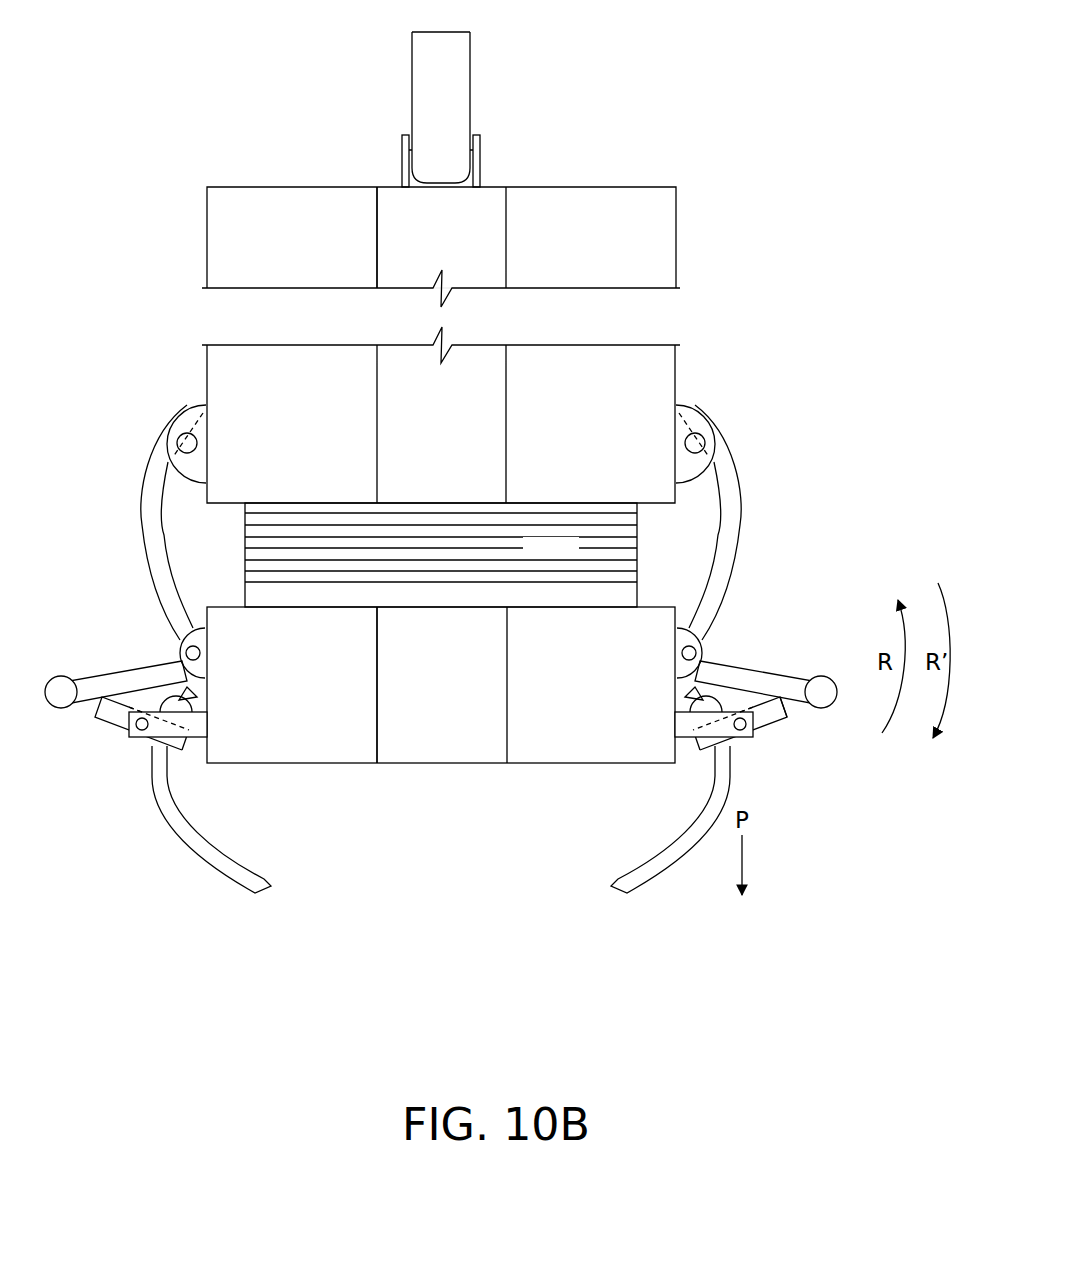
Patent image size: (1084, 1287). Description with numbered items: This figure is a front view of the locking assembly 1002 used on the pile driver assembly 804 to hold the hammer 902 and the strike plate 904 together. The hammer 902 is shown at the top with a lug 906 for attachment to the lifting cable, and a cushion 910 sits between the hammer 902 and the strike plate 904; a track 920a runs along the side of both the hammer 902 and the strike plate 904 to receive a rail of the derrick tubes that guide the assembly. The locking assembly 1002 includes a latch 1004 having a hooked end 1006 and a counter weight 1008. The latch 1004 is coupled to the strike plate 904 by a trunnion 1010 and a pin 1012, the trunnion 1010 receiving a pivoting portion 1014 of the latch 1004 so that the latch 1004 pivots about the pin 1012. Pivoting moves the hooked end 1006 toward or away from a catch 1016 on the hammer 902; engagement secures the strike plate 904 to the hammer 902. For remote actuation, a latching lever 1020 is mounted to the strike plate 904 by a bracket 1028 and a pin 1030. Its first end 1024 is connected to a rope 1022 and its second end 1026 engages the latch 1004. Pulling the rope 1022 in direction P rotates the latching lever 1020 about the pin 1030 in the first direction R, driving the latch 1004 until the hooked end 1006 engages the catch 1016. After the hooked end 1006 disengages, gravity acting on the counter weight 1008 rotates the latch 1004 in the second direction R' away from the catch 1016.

The pile driver assembly 804 is at (779, 280).
The hammer 902 is at (441, 345).
The strike plate 904 is at (441, 685).
The lug 906 is at (482, 147).
The cushion 910 is at (441, 555).
The track 920a is at (435, 230).
The locking assembly 1002 is at (680, 657).
The latch 1004 is at (738, 572).
The hooked end 1006 is at (699, 427).
The counter weight 1008 is at (826, 686).
The trunnion 1010 is at (700, 632).
The pin 1012 is at (703, 629).
The pivoting portion 1014 is at (711, 672).
The catch 1016 is at (685, 405).
The latching lever 1020 is at (772, 724).
The rope 1022 is at (663, 870).
The first end 1024 is at (715, 751).
The second end 1026 is at (786, 701).
The bracket 1028 is at (682, 718).
The pin 1030 is at (741, 734).